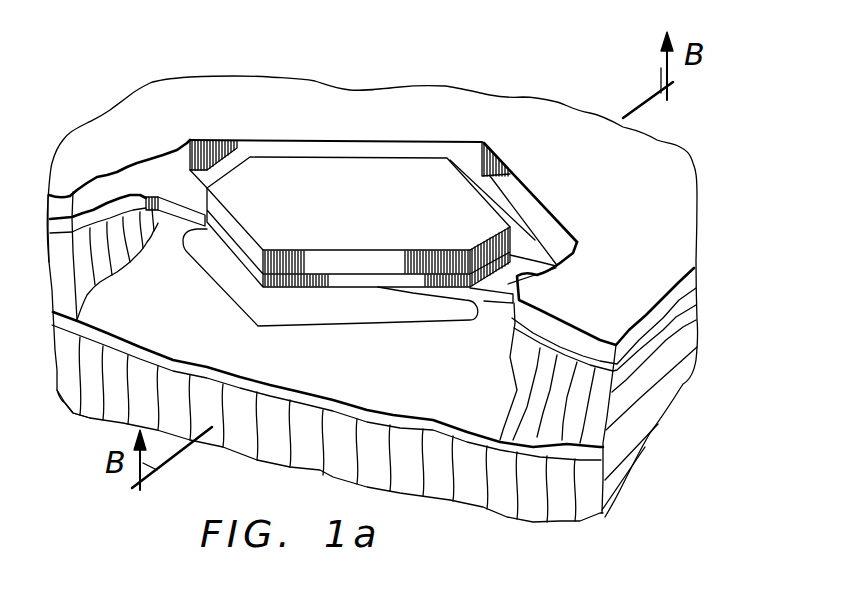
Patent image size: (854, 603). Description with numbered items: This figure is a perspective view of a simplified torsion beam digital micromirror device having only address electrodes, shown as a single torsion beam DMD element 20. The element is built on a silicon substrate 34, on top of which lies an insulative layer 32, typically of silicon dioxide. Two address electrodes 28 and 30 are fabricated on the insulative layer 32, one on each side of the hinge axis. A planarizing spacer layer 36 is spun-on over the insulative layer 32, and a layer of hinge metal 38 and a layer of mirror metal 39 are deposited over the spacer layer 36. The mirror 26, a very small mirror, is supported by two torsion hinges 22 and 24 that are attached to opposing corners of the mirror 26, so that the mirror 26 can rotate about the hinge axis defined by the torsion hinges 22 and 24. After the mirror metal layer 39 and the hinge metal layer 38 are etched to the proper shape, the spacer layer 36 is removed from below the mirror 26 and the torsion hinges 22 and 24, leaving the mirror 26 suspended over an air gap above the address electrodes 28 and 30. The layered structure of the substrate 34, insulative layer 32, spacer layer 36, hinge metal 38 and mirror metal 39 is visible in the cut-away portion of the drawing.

The torsion beam DMD element 20 is at (178, 74).
The torsion hinge 22 is at (192, 193).
The torsion hinge 24 is at (535, 262).
The mirror 26 is at (341, 217).
The address electrode 28 is at (372, 320).
The address electrode 30 is at (483, 298).
The insulative layer 32 is at (605, 484).
The silicon substrate 34 is at (540, 513).
The planarizing spacer layer 36 is at (597, 418).
The hinge metal layer 38 is at (615, 373).
The mirror metal layer 39 is at (584, 344).